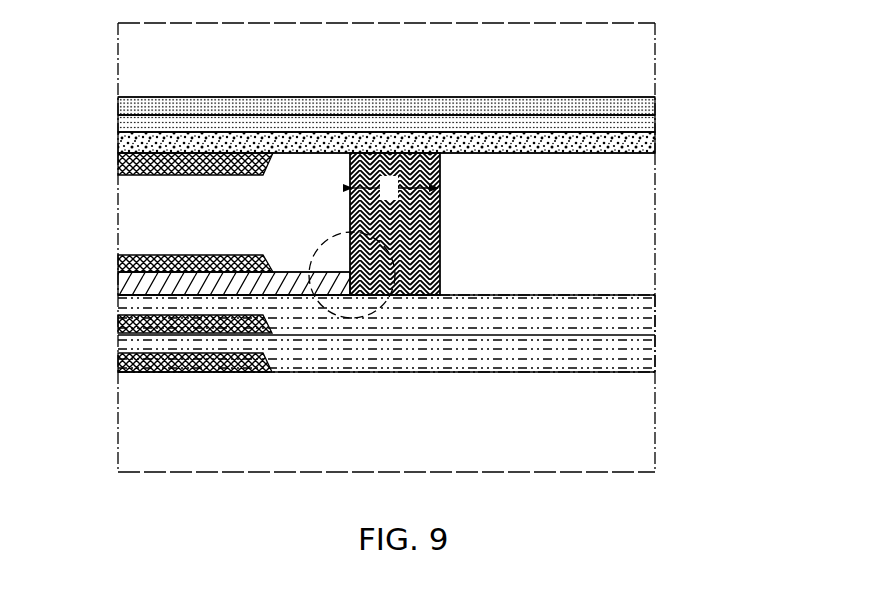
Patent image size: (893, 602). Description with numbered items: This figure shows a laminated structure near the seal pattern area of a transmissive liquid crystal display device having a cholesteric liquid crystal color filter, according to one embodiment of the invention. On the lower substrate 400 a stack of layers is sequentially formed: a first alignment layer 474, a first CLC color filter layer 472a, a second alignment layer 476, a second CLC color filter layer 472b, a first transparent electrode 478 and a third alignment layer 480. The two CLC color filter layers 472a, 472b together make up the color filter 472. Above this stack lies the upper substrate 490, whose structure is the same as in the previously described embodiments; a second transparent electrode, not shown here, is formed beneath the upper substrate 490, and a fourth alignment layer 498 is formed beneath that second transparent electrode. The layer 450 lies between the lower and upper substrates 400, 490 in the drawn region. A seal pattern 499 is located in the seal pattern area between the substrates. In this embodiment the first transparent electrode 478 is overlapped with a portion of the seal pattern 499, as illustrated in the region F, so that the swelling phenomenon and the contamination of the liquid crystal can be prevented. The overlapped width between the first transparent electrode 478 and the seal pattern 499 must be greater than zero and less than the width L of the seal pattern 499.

The lower substrate 400 is at (646, 436).
The dielectric layer 450 is at (644, 213).
The upper substrate 490 is at (641, 56).
The transistor layer 472 is at (757, 312).
The first CLC color filter layer 472a is at (655, 346).
The second CLC color filter layer 472b is at (655, 318).
The first alignment layer 474 is at (118, 363).
The second alignment layer 476 is at (118, 323).
The first transparent electrode 478 is at (118, 283).
The third alignment layer 480 is at (118, 258).
The fourth alignment layer 498 is at (118, 161).
The seal pattern 499 is at (440, 213).
The overlap region F is at (349, 232).
The width L of the seal pattern L is at (395, 189).